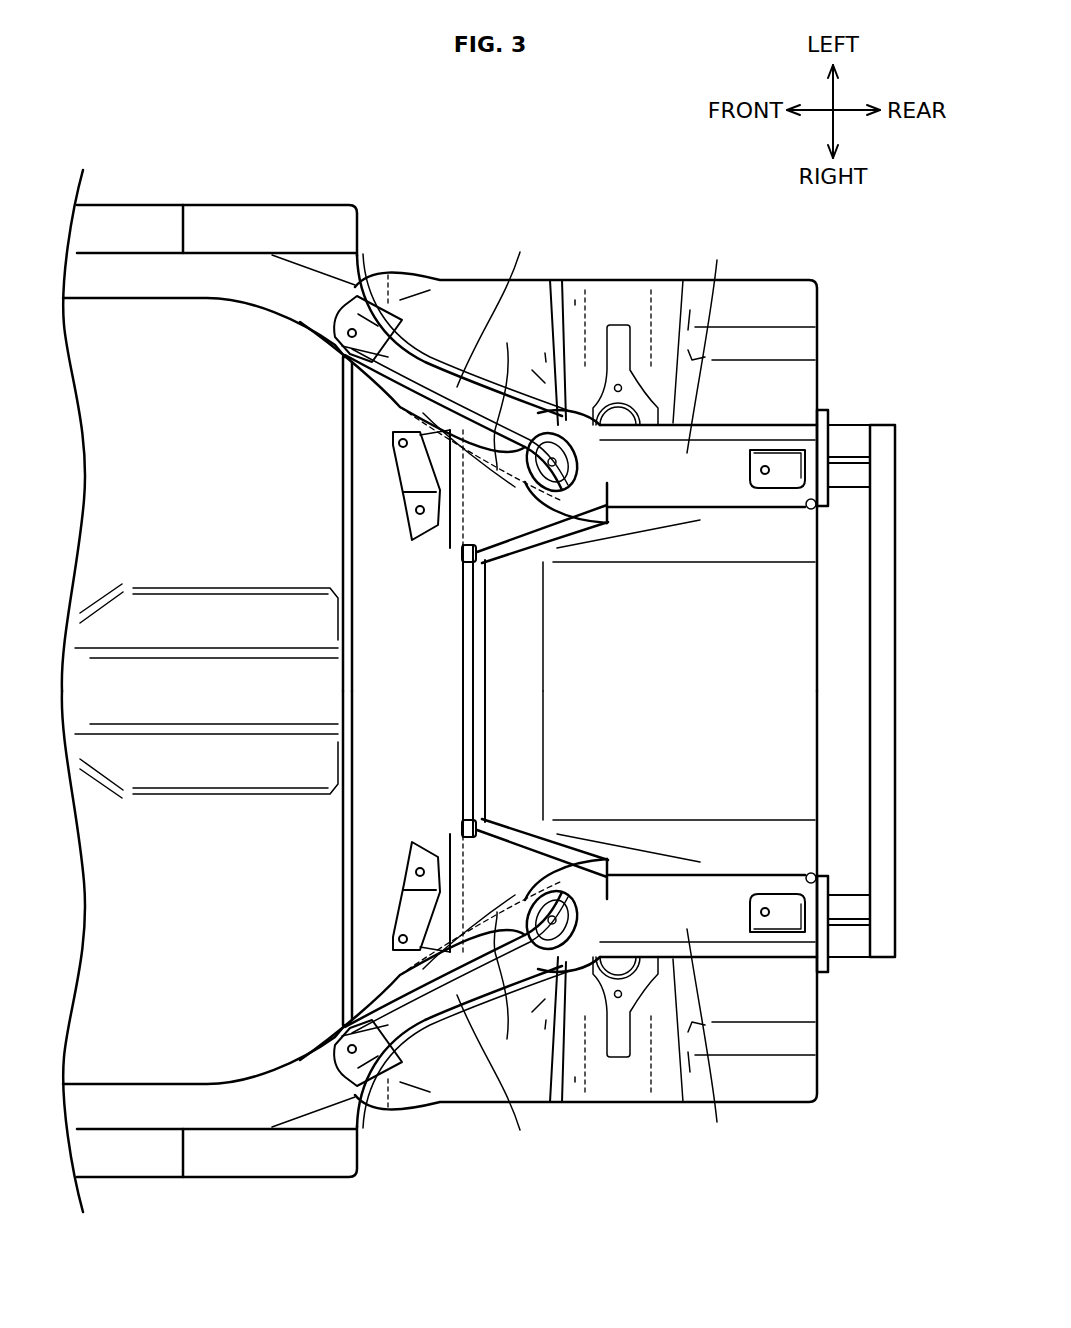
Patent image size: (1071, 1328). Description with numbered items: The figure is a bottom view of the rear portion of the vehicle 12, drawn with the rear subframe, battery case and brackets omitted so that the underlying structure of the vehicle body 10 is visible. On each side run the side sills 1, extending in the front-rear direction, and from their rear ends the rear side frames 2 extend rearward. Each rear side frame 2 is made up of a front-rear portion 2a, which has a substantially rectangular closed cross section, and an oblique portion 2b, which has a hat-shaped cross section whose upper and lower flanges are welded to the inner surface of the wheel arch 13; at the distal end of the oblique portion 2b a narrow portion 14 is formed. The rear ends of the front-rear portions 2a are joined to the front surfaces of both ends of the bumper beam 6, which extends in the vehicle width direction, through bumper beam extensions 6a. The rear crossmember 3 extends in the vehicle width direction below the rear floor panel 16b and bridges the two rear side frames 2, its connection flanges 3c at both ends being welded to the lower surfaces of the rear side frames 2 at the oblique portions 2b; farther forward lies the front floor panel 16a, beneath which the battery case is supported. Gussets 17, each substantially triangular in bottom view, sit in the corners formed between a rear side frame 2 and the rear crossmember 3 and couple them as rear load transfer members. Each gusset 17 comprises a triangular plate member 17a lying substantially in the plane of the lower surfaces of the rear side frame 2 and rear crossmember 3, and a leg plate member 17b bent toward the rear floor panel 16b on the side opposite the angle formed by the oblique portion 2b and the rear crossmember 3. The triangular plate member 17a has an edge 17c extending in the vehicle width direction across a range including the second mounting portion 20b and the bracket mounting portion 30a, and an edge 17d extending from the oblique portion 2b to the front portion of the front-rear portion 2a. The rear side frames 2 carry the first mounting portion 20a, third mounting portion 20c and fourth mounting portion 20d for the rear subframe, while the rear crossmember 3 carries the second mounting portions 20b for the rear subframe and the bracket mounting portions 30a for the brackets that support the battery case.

The side sill 1 is at (152, 215).
The rear side frame 2 is at (667, 692).
The front-rear portion 2a is at (717, 262).
The oblique portion 2b is at (511, 692).
The rear crossmember 3 is at (345, 800).
The connection flange 3c is at (447, 405).
The bumper beam 6 is at (896, 660).
The bumper beam extension 6a is at (850, 422).
The vehicle body 10 is at (483, 1103).
The vehicle 12 is at (320, 205).
The wheel arch 13 is at (364, 262).
The narrow portion 14 is at (405, 306).
The front floor panel 16a is at (135, 905).
The rear floor panel 16b is at (778, 778).
The gusset 17 is at (543, 554).
The triangular plate member 17a is at (509, 691).
The leg plate member 17b is at (517, 542).
The edge 17c is at (476, 550).
The edge 17d is at (518, 691).
The first mounting portion 20a is at (347, 334).
The second mounting portion 20b is at (392, 441).
The third mounting portion 20c is at (556, 462).
The fourth mounting portion 20d is at (763, 471).
The bracket mounting portion 30a is at (408, 530).